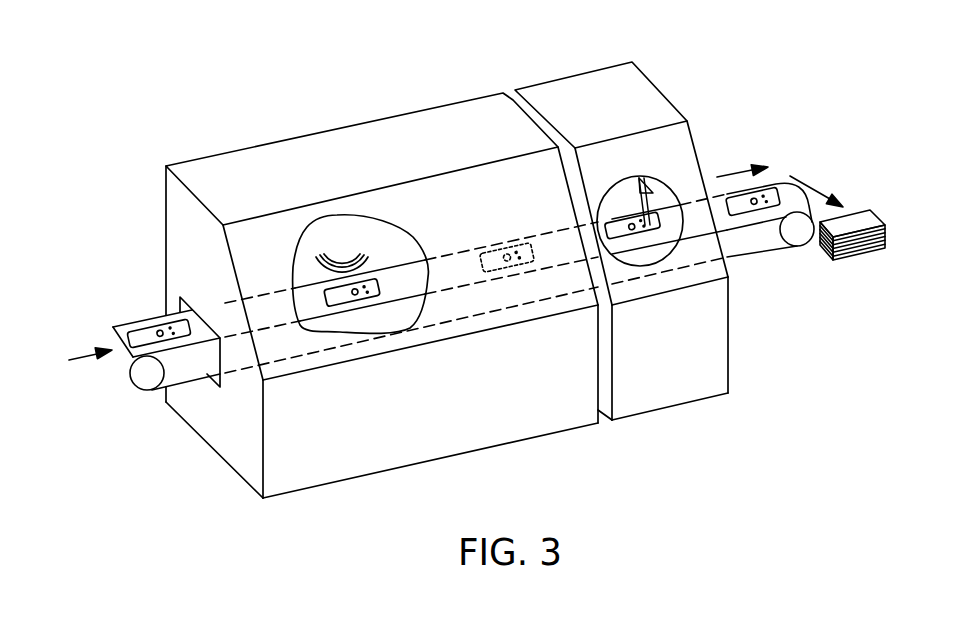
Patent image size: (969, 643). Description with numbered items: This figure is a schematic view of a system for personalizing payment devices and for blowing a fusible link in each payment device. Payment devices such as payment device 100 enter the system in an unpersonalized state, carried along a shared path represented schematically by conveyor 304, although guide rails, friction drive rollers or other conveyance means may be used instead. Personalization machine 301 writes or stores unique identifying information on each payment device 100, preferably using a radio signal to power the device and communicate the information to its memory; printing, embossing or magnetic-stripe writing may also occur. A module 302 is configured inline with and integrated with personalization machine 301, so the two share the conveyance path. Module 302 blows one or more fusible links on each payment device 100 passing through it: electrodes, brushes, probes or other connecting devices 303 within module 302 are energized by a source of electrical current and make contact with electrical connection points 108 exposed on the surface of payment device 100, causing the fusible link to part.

The payment device 100 is at (648, 264).
The electrical connection points 108 is at (663, 221).
The personalization machine 301 is at (318, 131).
The module 302 is at (568, 77).
The connecting devices 303 is at (642, 182).
The conveyor 304 is at (115, 342).